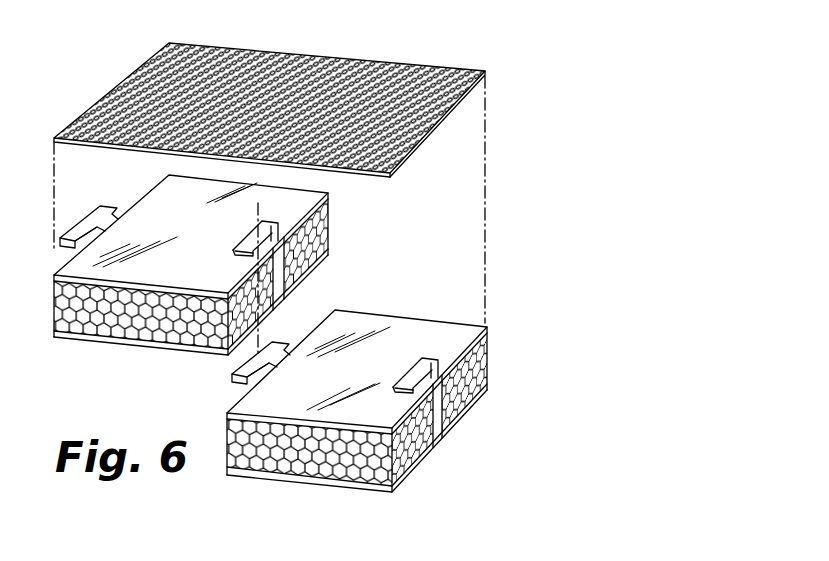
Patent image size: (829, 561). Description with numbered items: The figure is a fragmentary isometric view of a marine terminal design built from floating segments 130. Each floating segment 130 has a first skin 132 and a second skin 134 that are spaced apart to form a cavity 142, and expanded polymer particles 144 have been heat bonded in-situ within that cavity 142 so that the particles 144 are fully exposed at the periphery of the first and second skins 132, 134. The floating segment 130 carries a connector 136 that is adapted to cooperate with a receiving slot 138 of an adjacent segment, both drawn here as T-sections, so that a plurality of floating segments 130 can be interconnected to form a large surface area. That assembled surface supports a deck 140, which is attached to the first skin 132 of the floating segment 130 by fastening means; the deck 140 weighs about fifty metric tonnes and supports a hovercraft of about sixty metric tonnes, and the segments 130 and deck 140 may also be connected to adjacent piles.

The floating segment 130 is at (386, 312).
The first skin 132 is at (453, 340).
The second skin 134 is at (467, 402).
The connector 136 is at (232, 370).
The receiving slot 138 is at (240, 247).
The deck 140 is at (343, 78).
The cavity 142 is at (428, 442).
The expanded polymer particles 144 is at (313, 452).